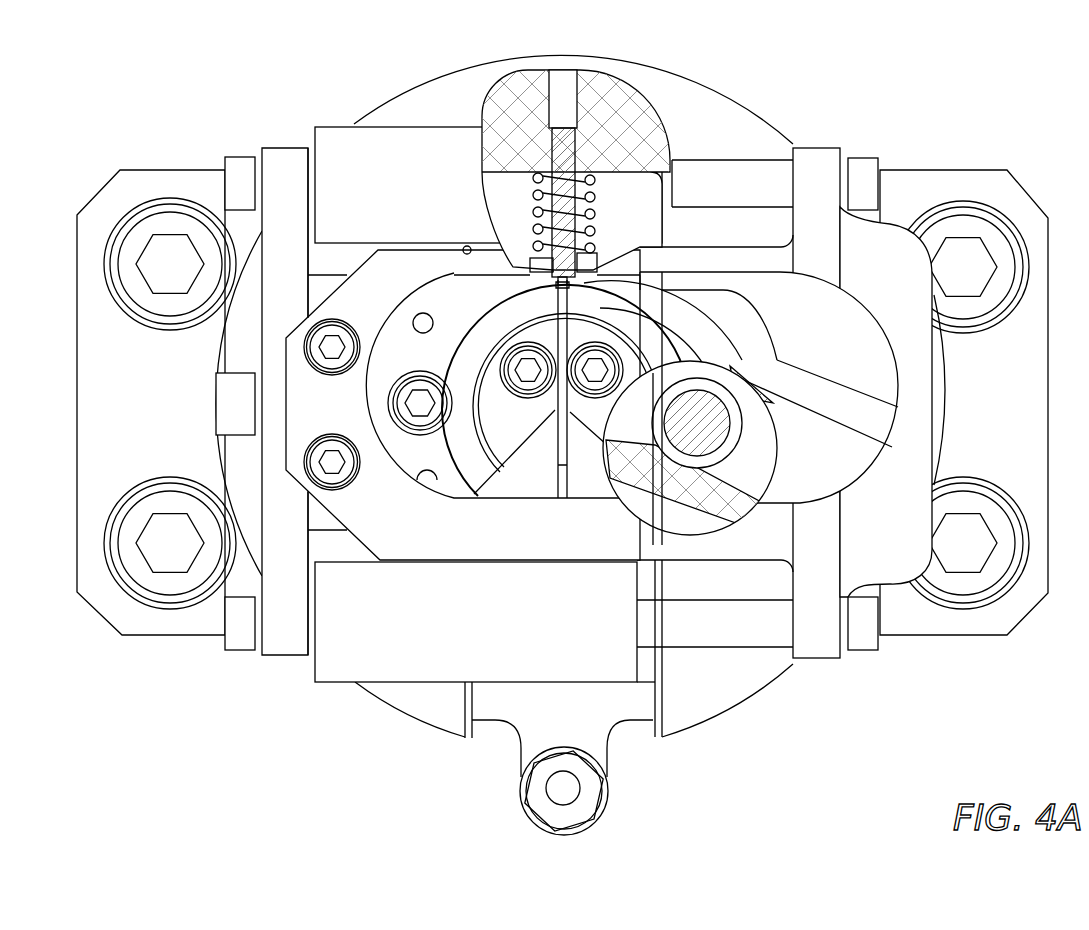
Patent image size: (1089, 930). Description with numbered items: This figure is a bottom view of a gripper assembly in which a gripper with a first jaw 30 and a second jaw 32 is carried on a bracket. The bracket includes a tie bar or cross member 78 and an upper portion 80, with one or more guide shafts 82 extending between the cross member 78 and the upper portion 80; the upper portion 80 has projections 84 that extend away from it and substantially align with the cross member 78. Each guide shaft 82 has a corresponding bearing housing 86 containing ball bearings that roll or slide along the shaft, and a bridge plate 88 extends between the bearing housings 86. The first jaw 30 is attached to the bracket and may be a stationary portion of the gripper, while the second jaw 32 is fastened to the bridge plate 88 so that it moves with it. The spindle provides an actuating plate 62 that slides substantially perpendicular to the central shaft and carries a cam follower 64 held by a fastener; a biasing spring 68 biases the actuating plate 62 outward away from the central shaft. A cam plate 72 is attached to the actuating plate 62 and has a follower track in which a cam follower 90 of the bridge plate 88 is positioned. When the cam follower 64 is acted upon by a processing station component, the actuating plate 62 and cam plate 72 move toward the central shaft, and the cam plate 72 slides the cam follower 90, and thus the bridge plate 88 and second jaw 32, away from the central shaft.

The first jaw 30 is at (467, 310).
The second jaw 32 is at (668, 323).
The actuating plate 62 is at (622, 753).
The cam follower 64 is at (574, 845).
The biasing spring 68 is at (582, 160).
The cam plate 72 is at (814, 370).
The cross member 78 is at (248, 332).
The upper portion 80 is at (348, 268).
The guide shafts 82 is at (727, 146).
The projections 84 is at (815, 146).
The bearing housings 86 is at (353, 122).
The bridge plate 88 is at (722, 325).
The cam follower 90 is at (744, 455).